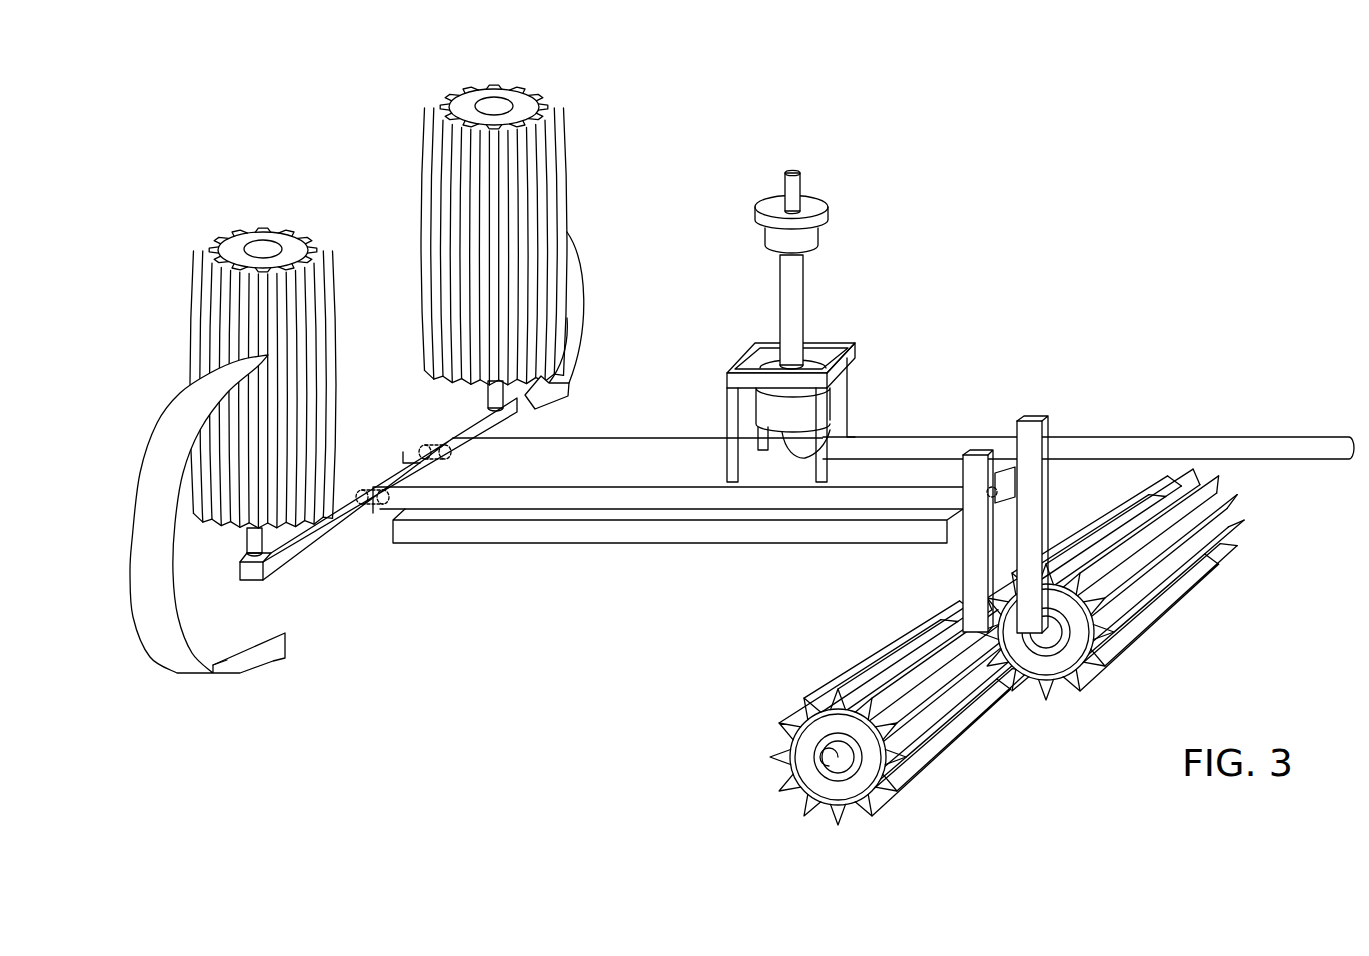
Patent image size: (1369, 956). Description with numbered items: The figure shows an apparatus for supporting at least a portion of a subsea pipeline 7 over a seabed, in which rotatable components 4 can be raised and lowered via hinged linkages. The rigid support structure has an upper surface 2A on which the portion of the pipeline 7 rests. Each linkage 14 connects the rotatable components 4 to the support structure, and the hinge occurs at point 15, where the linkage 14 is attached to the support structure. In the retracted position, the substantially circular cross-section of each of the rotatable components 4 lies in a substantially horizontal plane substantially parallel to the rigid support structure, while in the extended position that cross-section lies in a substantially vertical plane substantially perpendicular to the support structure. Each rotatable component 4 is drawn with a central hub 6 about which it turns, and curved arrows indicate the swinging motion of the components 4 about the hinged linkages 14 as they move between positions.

The upper surface 2A is at (607, 468).
The rotatable component 4 is at (334, 348).
The roller axle hub 6 is at (263, 247).
The subsea pipeline 7 is at (1222, 436).
The linkage 14 is at (323, 530).
The hinge point 15 is at (421, 452).